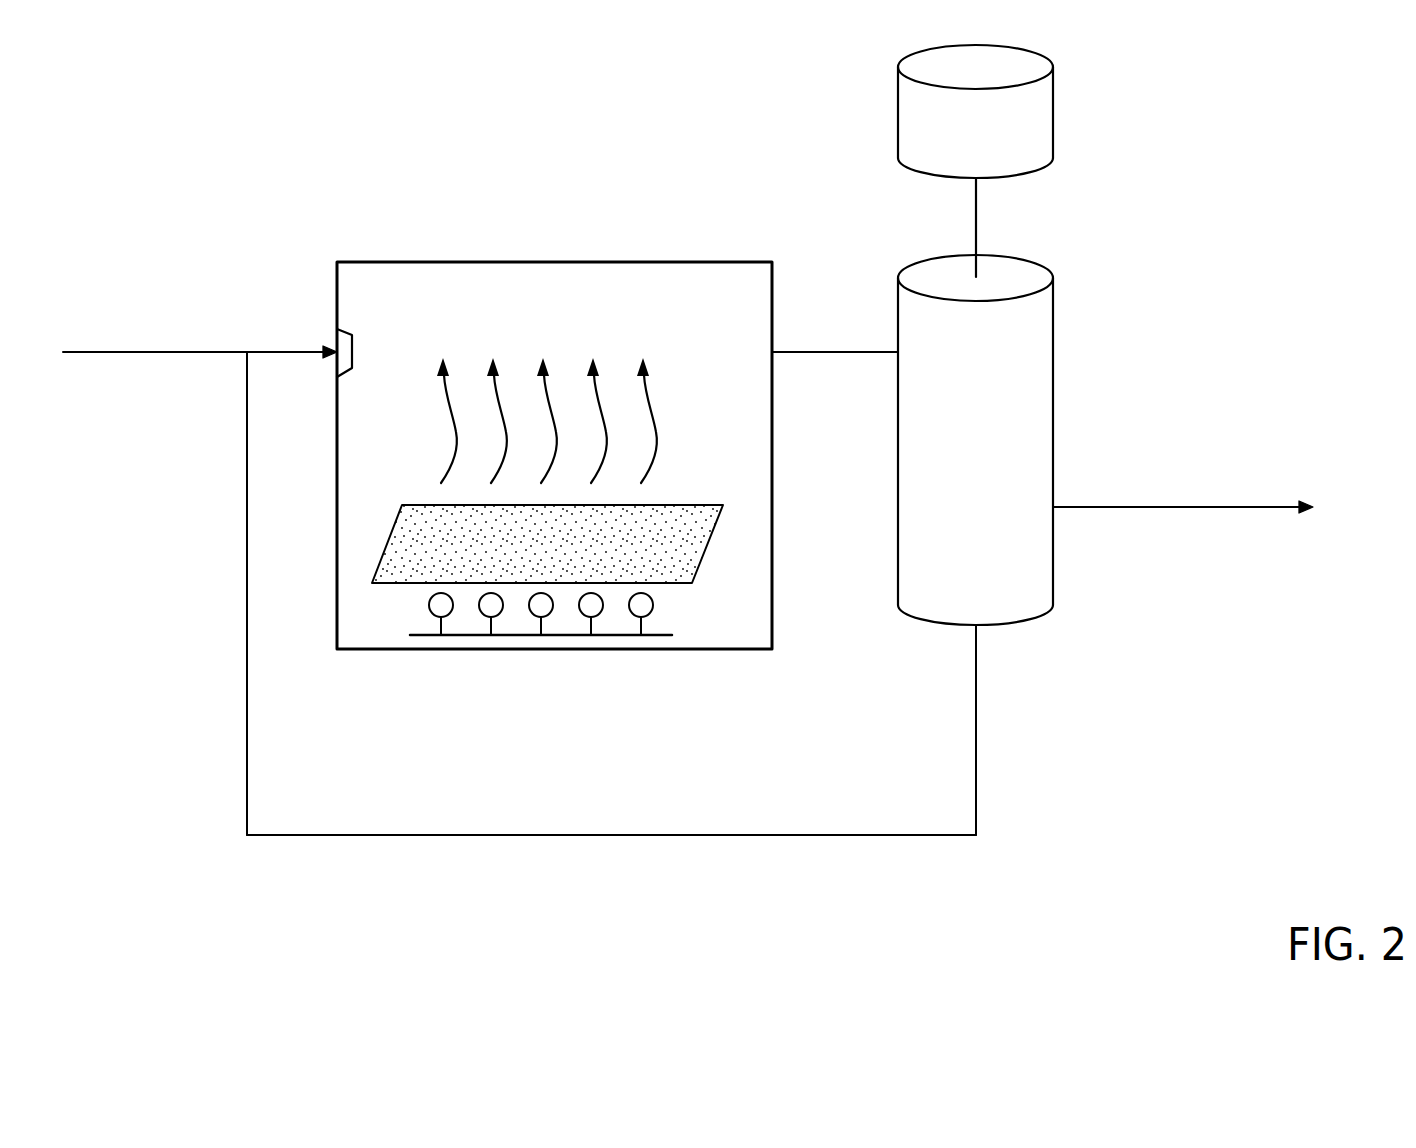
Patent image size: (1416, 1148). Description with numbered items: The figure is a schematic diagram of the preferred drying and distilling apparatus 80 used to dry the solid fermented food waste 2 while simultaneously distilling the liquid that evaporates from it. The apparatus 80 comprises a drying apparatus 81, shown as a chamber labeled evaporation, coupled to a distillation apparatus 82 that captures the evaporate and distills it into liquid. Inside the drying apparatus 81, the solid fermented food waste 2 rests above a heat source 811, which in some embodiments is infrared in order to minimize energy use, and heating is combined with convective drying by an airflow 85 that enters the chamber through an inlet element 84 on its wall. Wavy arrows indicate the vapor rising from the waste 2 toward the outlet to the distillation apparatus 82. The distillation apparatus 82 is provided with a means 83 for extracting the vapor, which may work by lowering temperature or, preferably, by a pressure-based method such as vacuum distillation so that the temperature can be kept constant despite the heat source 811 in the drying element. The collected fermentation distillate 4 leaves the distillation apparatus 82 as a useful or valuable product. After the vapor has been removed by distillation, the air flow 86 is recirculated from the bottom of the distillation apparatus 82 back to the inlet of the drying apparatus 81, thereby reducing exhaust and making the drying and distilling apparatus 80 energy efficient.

The drying and distilling apparatus 80 is at (346, 178).
The drying apparatus 81 is at (703, 262).
The heat source 811 is at (507, 637).
The air inlet valve 84 is at (352, 334).
The airflow 85 is at (146, 355).
The air flow 86 is at (612, 838).
The distillation apparatus 82 is at (1053, 322).
The means for extracting the vapor 83 is at (1053, 112).
The solid fermented food waste 2 is at (663, 557).
The fermentation distillate 4 is at (1223, 505).